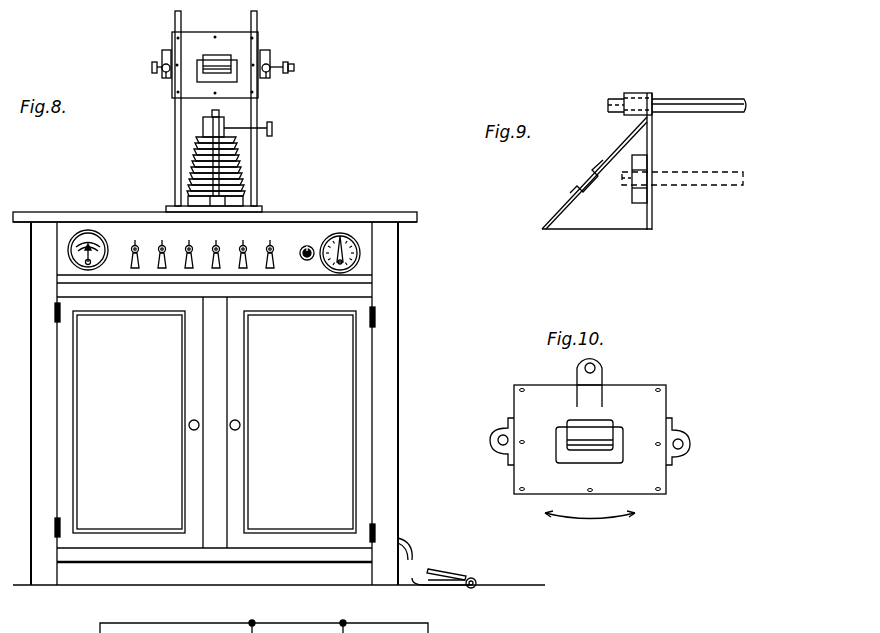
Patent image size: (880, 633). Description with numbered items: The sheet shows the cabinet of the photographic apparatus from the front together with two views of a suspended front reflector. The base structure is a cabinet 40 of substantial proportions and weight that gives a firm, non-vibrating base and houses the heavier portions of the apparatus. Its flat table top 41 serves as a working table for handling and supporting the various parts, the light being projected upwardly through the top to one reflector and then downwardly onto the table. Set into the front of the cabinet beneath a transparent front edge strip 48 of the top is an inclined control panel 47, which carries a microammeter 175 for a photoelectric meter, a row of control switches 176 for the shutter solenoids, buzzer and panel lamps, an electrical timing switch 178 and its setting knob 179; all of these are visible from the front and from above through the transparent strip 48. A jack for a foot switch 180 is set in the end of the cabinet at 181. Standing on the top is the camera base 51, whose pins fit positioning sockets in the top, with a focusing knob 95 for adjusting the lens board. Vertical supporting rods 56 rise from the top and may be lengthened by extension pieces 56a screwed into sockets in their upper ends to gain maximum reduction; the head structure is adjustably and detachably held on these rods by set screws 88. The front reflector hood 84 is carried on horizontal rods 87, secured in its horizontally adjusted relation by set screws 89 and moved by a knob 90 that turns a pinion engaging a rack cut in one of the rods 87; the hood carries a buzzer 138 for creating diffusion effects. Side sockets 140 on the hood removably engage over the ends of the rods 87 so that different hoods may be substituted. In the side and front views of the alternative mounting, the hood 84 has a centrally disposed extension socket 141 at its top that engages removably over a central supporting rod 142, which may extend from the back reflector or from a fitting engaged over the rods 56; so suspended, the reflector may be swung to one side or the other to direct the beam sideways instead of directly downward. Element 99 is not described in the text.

In FIG. 8, the cabinet 40 is at (399, 331).
In FIG. 8, the table top 41 is at (333, 221).
In FIG. 8, the control panel 47 is at (275, 221).
In FIG. 8, the transparent front edge strip 48 is at (417, 220).
In FIG. 8, the camera base 51 is at (195, 185).
In FIG. 8, the supporting rods 56 is at (175, 148).
In FIG. 8, the extension pieces 56a is at (251, 22).
In FIG. 8, the front reflector hood 84 is at (192, 43).
In FIG. 9, the front reflector hood 84 is at (563, 208).
In FIG. 10, the front reflector hood 84 is at (653, 415).
In FIG. 8, the rods 87 is at (165, 74).
In FIG. 9, the rods 87 is at (718, 186).
In FIG. 8, the set screws 88 is at (162, 53).
In FIG. 8, the set screws 89 is at (150, 68).
In FIG. 8, the knob 90 is at (294, 64).
In FIG. 8, the focusing knob 95 is at (272, 133).
In FIG. 8, the head block 99 is at (207, 120).
In FIG. 8, the buzzer 138 is at (225, 62).
In FIG. 9, the buzzer 138 is at (587, 163).
In FIG. 10, the buzzer 138 is at (582, 427).
In FIG. 9, the side sockets 140 is at (647, 174).
In FIG. 10, the side sockets 140 is at (490, 441).
In FIG. 9, the extension sockets 141 is at (643, 94).
In FIG. 10, the extension sockets 141 is at (582, 378).
In FIG. 9, the central supporting rod 142 is at (713, 102).
In FIG. 10, the central supporting rod 142 is at (600, 368).
In FIG. 8, the microammeter 175 is at (84, 238).
In FIG. 8, the control switches 176 is at (243, 242).
In FIG. 8, the electrical timing switch 178 is at (362, 250).
In FIG. 8, the setting knob 179 is at (307, 247).
In FIG. 8, the foot switch 180 is at (472, 581).
In FIG. 8, the jack location 181 is at (405, 540).